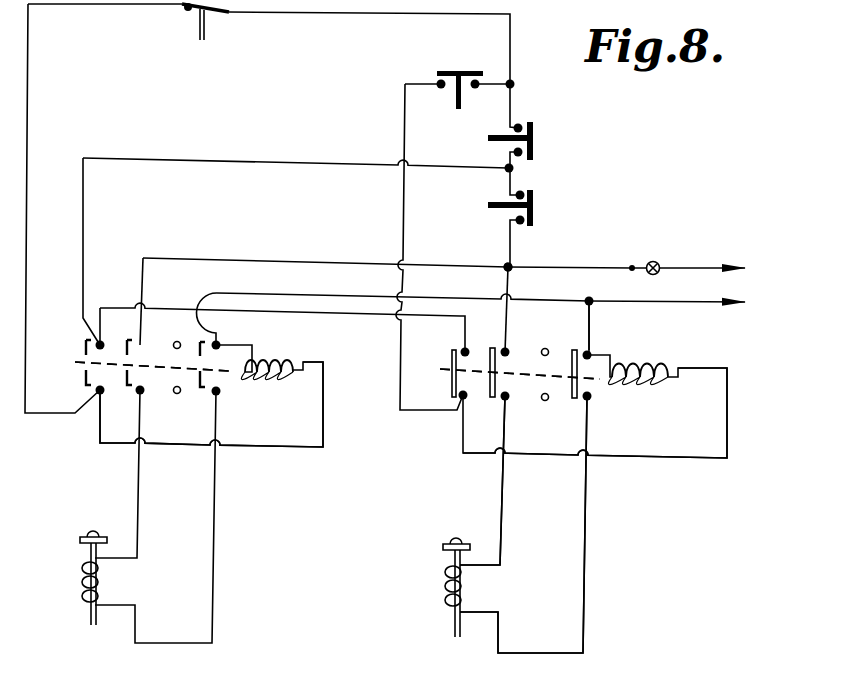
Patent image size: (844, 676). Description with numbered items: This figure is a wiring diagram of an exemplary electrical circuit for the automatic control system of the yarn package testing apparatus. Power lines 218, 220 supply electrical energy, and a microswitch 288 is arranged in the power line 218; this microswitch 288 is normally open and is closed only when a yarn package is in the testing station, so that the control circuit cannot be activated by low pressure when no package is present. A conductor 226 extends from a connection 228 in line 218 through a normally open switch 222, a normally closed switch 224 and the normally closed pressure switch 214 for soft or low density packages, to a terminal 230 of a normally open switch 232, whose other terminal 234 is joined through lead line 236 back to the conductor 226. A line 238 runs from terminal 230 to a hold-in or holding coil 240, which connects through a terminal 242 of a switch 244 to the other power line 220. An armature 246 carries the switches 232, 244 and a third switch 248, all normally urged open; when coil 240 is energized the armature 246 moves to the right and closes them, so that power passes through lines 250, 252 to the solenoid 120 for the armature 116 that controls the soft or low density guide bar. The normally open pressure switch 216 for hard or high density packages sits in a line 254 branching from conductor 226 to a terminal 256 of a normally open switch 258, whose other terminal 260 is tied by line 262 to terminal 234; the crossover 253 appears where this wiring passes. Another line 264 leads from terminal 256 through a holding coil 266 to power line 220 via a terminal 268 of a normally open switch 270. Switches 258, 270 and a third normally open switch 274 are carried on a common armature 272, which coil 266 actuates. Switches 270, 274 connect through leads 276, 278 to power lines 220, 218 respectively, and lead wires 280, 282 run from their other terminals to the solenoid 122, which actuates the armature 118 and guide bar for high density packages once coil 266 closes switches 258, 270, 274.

The armature 116 is at (92, 527).
The armature 118 is at (452, 540).
The solenoid 120 is at (86, 586).
The solenoid 122 is at (452, 598).
The pressure switch 214 is at (213, 20).
The pressure switch 216 is at (484, 42).
The power line 218 is at (572, 268).
The power line 220 is at (690, 302).
The normally open switch 222 is at (600, 125).
The normally closed switch 224 is at (540, 200).
The conductor 226 is at (314, 14).
The connection 228 is at (505, 266).
The terminal 230 is at (96, 389).
The normally open switch 232 is at (82, 362).
The terminal 234 is at (102, 343).
The lead line 236 is at (311, 160).
The line 238 is at (100, 450).
The holding coil 240 is at (290, 364).
The terminal 242 is at (219, 346).
The switch 244 is at (195, 391).
The armature 246 is at (220, 372).
The third switch 248 is at (98, 396).
The line 250 is at (145, 292).
The line 252 is at (213, 608).
The conductor crossover 253 is at (218, 295).
The line 254 is at (404, 141).
The terminal 256 is at (462, 401).
The normally open switch 258 is at (450, 377).
The terminal 260 is at (468, 350).
The line 262 is at (358, 318).
The line 264 is at (455, 456).
The holding coil 266 is at (642, 386).
The terminal 268 is at (591, 354).
The normally open switch 270 is at (563, 401).
The armature 272 is at (518, 372).
The third normally open switch 274 is at (487, 405).
The lead 276 is at (590, 323).
The lead 278 is at (515, 312).
The lead wire 280 is at (585, 535).
The lead wire 282 is at (503, 509).
The microswitch 288 is at (648, 262).